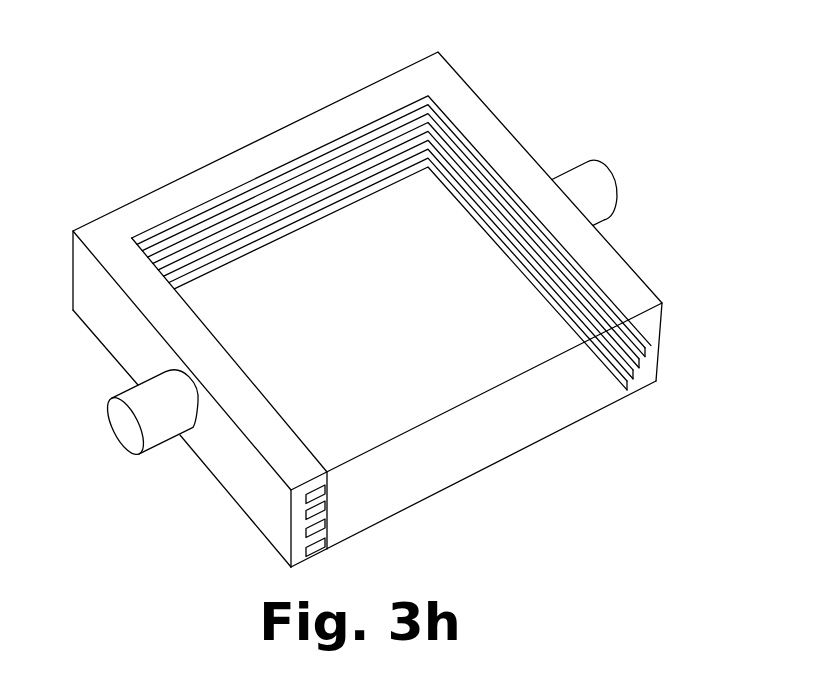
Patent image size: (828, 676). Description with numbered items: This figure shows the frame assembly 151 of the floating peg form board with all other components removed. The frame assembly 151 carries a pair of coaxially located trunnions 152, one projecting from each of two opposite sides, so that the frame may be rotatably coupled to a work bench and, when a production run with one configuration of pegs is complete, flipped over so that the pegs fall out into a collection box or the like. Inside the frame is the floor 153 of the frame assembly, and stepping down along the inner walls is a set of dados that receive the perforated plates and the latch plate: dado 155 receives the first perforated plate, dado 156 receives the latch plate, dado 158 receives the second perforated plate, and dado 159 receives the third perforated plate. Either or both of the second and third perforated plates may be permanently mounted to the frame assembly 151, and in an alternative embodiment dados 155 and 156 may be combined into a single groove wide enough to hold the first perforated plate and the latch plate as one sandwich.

The frame assembly 151 is at (267, 134).
The trunnions 152 is at (118, 426).
The floor 153 is at (440, 438).
The dado 155 is at (308, 497).
The dado 156 is at (308, 512).
The dado 158 is at (308, 532).
The dado 159 is at (308, 552).